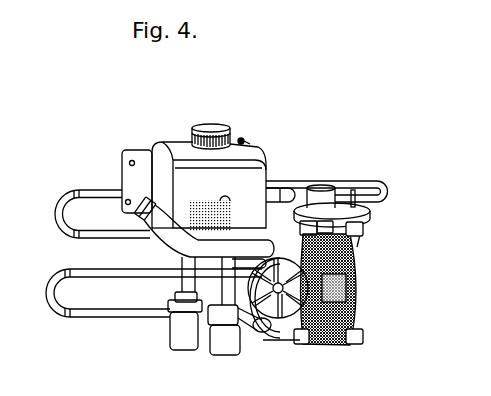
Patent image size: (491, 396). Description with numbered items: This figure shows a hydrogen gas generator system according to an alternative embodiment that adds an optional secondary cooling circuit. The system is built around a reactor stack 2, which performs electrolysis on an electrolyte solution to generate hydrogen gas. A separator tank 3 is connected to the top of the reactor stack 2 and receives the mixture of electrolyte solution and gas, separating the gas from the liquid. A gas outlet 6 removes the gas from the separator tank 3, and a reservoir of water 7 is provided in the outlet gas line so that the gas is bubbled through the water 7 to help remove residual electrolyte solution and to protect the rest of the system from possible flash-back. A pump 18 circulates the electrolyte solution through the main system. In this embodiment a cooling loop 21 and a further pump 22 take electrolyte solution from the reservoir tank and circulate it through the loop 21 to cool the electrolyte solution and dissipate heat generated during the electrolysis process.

The reactor stack 2 is at (359, 288).
The separator tank 3 is at (261, 170).
The gas outlet 6 is at (243, 141).
The reservoir of water 7 is at (366, 223).
The pump 18 is at (232, 347).
The cooling loop 21 is at (73, 194).
The pump 22 is at (176, 339).